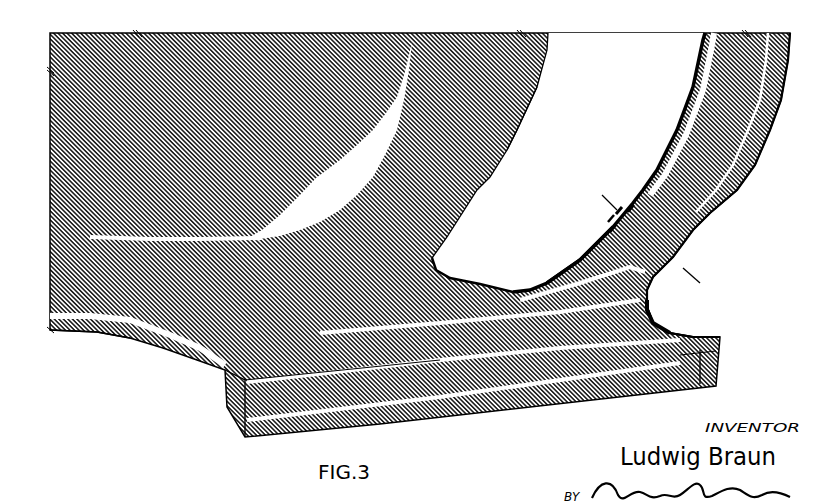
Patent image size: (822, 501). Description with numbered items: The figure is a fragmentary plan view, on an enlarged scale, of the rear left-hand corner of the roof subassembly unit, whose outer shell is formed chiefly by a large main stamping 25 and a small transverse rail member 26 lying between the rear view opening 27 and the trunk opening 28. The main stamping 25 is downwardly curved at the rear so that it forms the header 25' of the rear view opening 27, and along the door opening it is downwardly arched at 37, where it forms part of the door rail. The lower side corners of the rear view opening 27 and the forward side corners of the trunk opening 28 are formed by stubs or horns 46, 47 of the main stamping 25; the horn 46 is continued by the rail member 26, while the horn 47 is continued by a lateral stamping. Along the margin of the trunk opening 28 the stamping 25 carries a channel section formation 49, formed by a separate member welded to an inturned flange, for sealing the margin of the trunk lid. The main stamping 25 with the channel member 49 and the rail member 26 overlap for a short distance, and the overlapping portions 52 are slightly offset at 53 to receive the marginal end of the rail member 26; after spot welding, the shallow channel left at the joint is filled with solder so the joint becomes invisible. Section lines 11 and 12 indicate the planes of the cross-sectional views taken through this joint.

The main stamping 25 is at (418, 223).
The header of the rear view opening 25' is at (542, 118).
The rear view opening 27 is at (636, 78).
The transverse rail member 26 is at (753, 96).
The trunk opening 28 is at (755, 221).
The overlapping portions 52 is at (618, 212).
The section line 11 is at (632, 209).
The section line 12 is at (609, 183).
The offset 53 is at (613, 219).
The horn 46 is at (573, 272).
The channel section formation 49 is at (670, 328).
The horn 47 is at (678, 372).
The downwardly arched portion 37 is at (80, 293).